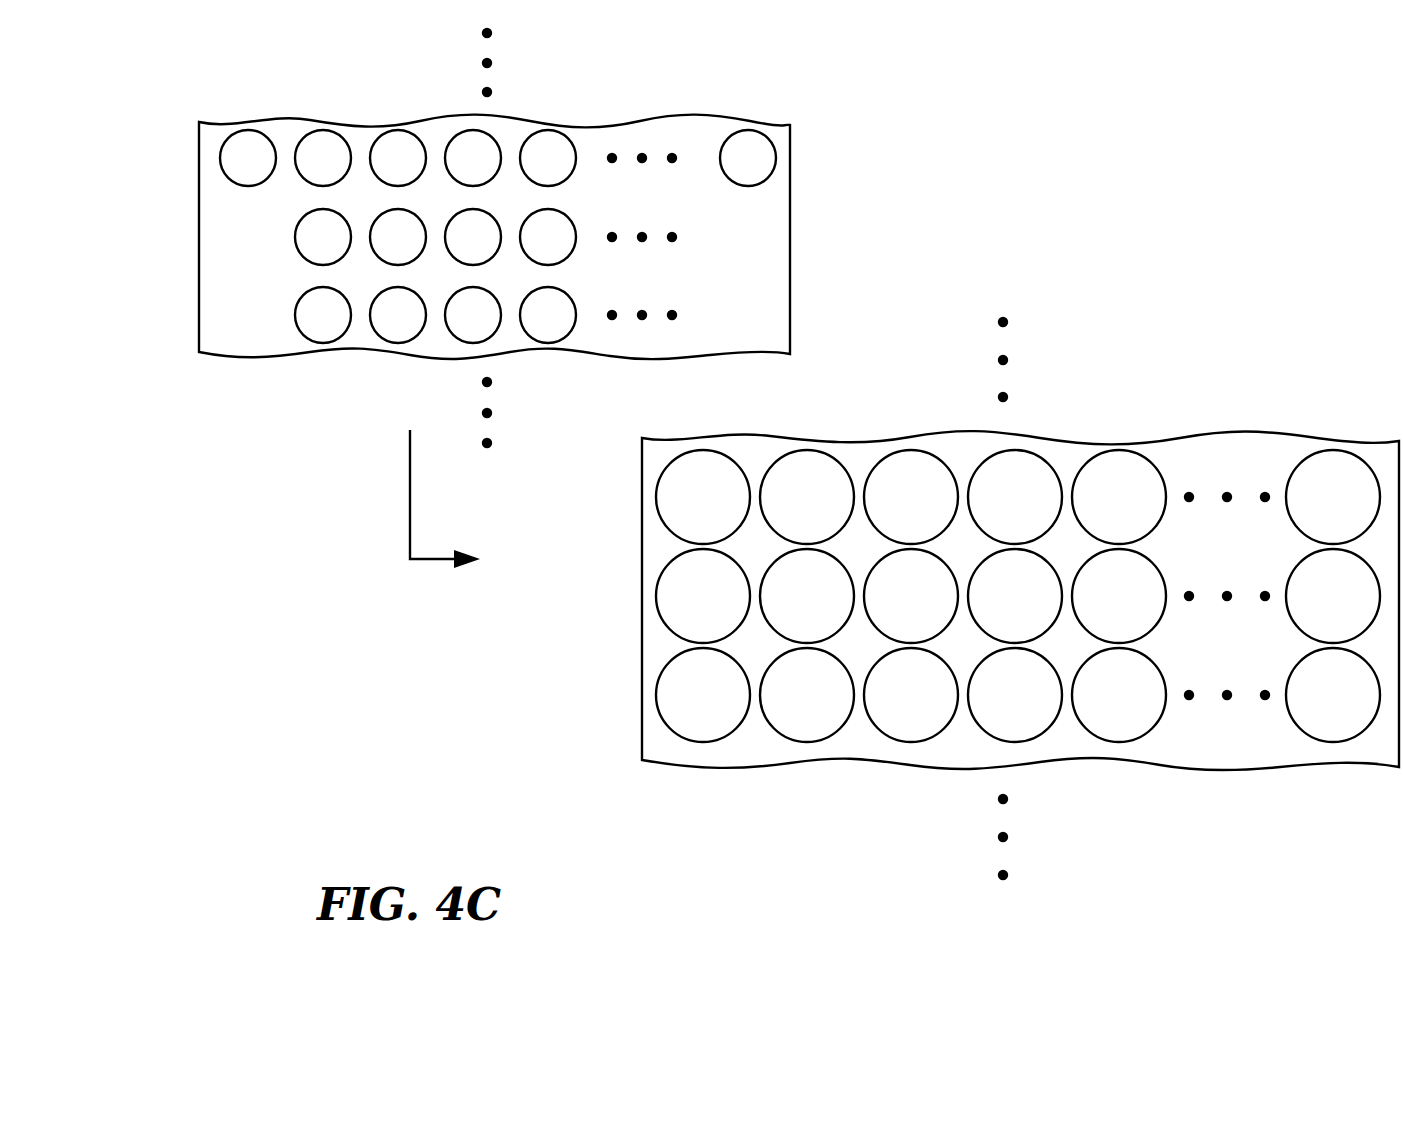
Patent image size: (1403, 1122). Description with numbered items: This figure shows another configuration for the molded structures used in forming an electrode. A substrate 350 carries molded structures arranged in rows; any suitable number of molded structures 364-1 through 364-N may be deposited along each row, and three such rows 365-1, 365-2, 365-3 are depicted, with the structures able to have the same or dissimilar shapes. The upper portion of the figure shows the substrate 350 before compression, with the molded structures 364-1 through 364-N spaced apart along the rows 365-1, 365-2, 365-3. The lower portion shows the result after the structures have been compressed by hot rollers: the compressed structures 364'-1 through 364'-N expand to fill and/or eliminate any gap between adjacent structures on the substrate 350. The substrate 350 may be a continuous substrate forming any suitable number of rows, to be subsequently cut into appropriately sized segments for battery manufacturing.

The substrate 350 is at (199, 282).
The molded structure 364-1 is at (247, 130).
The molded structure 364-N is at (748, 131).
The row 365-1 is at (822, 142).
The row 365-2 is at (822, 222).
The row 365-3 is at (822, 302).
The compressed structure 364'-1 is at (776, 461).
The compressed structure 364'-N is at (1282, 459).